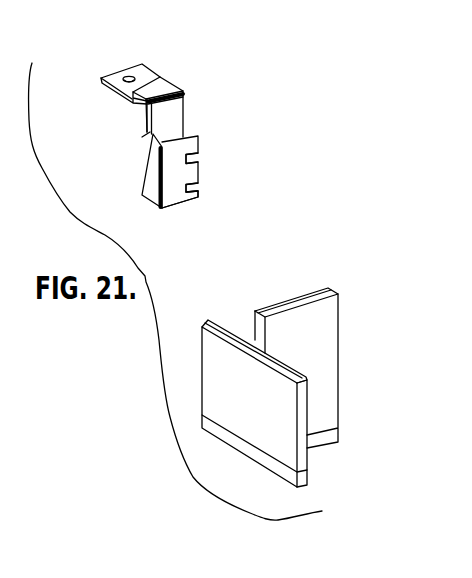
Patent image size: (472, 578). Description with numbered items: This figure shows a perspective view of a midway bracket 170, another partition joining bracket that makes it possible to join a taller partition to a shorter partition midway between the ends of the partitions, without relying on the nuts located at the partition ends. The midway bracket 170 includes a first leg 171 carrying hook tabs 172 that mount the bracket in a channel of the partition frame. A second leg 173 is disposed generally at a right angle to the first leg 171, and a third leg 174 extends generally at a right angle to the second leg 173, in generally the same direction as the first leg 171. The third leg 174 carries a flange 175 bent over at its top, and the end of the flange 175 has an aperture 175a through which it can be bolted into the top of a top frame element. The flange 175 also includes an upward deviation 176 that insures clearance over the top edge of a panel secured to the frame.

The midway bracket 170 is at (181, 113).
The first leg 171 is at (186, 192).
The hook tabs 172 is at (195, 147).
The second leg 173 is at (153, 168).
The third leg 174 is at (167, 110).
The flange 175 is at (142, 64).
The aperture 175a is at (128, 74).
The upward deviation 176 is at (163, 87).